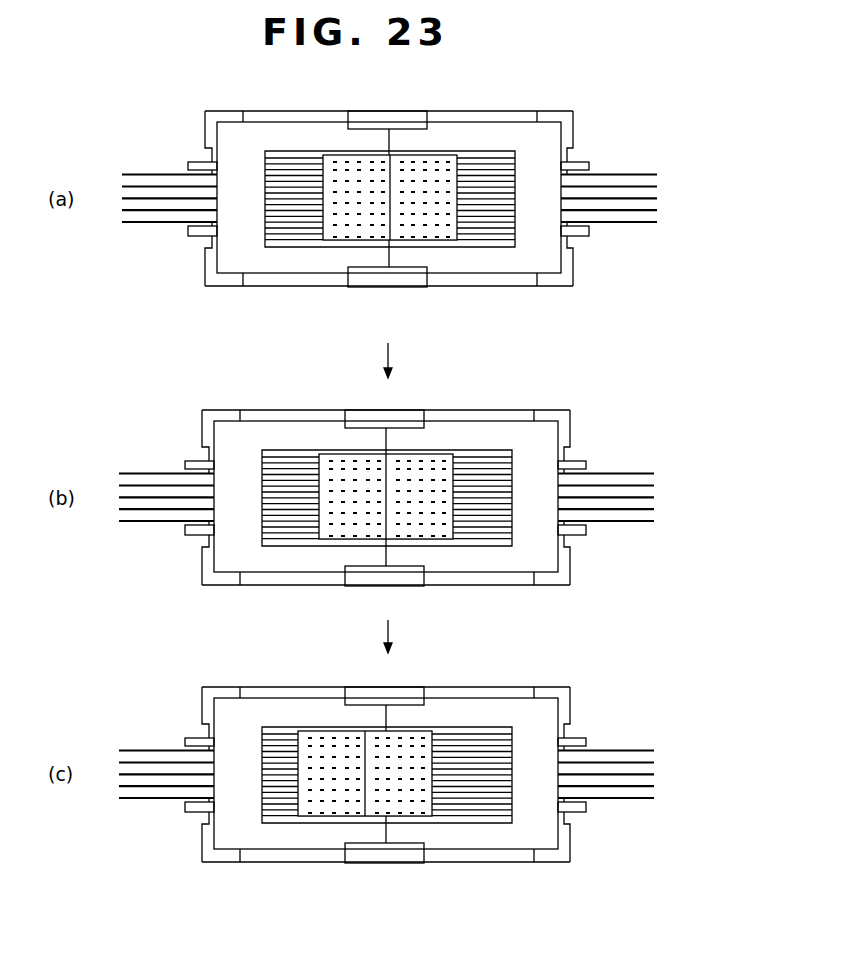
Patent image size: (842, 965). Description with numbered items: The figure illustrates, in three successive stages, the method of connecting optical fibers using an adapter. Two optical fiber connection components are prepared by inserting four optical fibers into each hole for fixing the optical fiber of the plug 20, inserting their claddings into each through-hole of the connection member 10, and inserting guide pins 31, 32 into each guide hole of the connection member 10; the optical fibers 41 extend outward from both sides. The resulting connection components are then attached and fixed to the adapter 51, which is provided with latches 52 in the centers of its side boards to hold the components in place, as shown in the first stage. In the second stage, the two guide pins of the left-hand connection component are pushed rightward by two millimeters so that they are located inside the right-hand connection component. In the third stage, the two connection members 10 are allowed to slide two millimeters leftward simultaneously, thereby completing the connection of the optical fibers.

The connection member 10 is at (342, 165).
The plug 20 is at (263, 263).
The guide pin 31 is at (200, 236).
The guide pin 32 is at (202, 165).
The lead wires 41 is at (143, 206).
The adapter 51 is at (303, 282).
The latch 52 is at (398, 125).